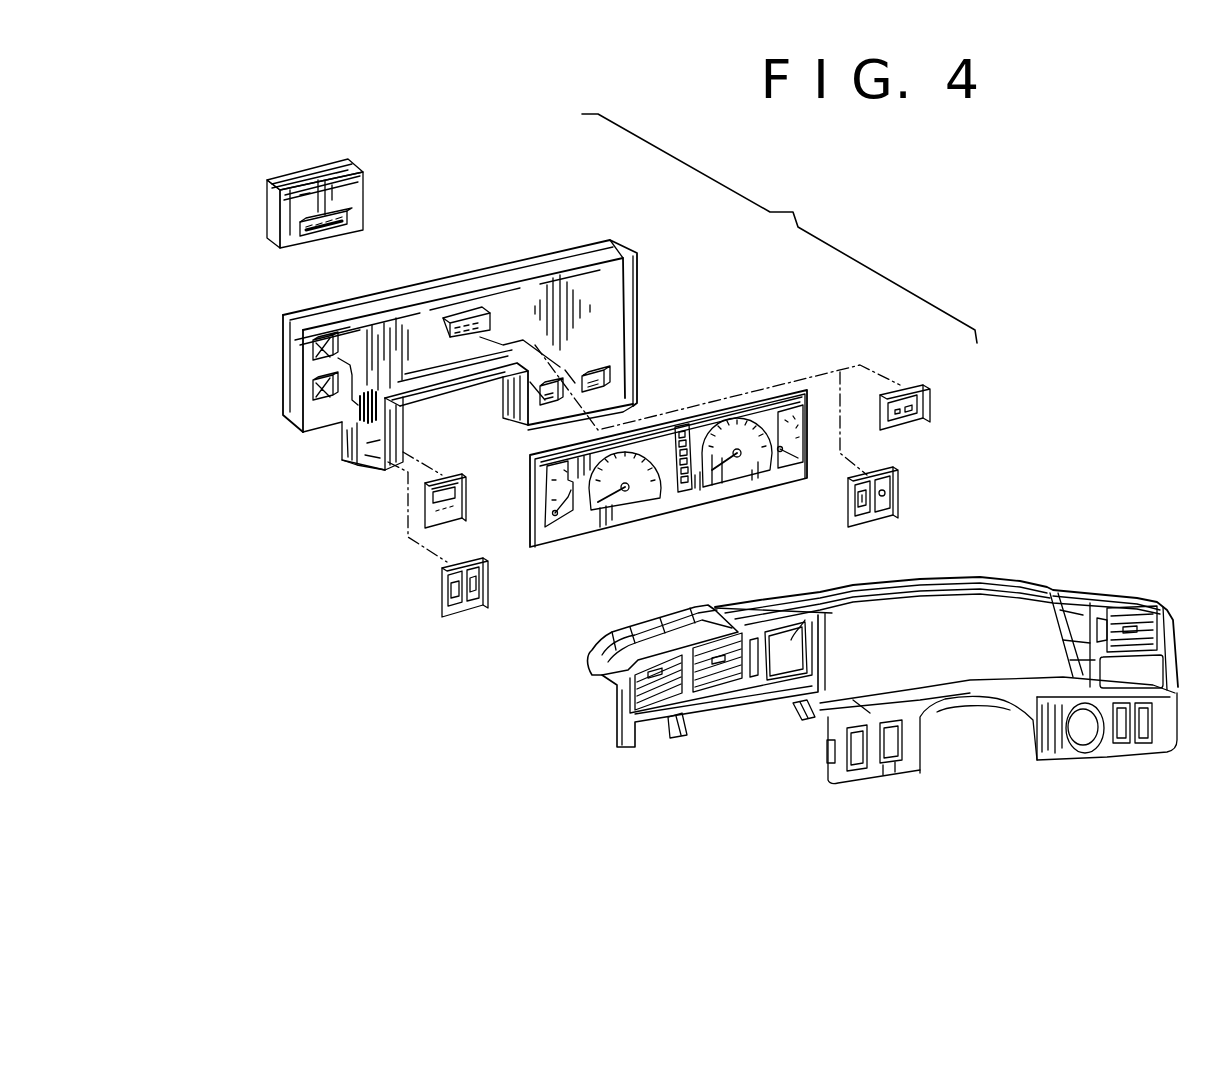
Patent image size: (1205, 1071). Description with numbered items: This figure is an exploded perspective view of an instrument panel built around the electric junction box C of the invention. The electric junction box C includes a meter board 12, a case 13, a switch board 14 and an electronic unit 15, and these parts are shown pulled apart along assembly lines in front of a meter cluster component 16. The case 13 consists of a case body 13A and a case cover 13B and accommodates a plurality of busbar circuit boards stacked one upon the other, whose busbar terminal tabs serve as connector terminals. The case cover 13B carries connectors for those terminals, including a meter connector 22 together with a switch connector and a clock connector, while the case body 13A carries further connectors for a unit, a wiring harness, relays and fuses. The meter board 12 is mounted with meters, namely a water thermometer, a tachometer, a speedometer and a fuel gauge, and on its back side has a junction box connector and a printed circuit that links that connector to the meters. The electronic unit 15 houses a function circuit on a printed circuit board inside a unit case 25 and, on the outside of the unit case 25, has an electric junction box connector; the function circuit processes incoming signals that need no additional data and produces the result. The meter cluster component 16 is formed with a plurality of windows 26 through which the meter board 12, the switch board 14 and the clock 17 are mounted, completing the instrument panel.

The meter board 12 is at (681, 461).
The case 13 is at (471, 316).
The case body 13A is at (460, 355).
The case cover 13B is at (602, 308).
The switch board 14 is at (908, 392).
The electronic unit 15 is at (366, 197).
The meter cluster component 16 is at (1047, 590).
The clock 17 is at (425, 510).
The meter connector 22 is at (470, 306).
The unit case 25 is at (338, 170).
The windows 26 is at (888, 617).
The electric junction box C is at (779, 228).